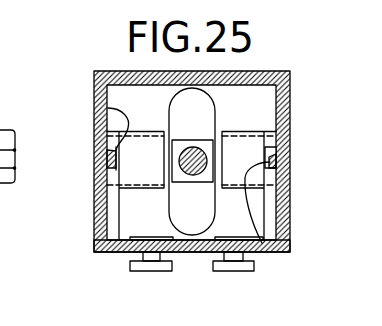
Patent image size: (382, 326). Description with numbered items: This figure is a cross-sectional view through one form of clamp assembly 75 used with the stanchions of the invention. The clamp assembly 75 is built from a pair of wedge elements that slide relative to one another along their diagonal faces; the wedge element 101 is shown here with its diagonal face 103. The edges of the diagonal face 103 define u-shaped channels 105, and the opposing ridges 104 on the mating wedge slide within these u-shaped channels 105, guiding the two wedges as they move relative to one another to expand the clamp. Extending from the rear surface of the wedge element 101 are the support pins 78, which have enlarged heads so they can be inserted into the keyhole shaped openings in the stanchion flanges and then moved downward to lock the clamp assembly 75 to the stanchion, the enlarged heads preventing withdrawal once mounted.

The clamp assembly 75 is at (75, 93).
The diagonal face 103 is at (94, 244).
The u-shaped channels 105 is at (108, 108).
The opposing ridges 104 is at (262, 243).
The support pins 78 is at (152, 272).
The wedge element 101 is at (8, 204).